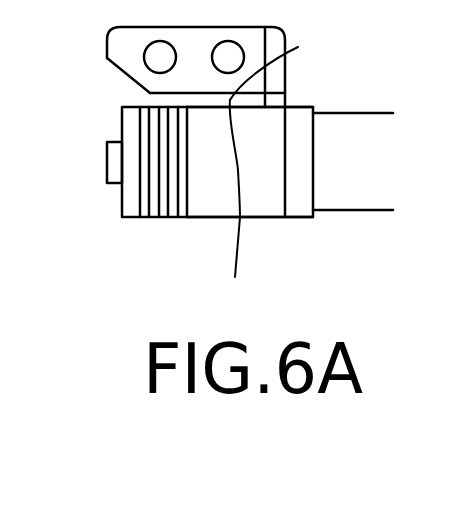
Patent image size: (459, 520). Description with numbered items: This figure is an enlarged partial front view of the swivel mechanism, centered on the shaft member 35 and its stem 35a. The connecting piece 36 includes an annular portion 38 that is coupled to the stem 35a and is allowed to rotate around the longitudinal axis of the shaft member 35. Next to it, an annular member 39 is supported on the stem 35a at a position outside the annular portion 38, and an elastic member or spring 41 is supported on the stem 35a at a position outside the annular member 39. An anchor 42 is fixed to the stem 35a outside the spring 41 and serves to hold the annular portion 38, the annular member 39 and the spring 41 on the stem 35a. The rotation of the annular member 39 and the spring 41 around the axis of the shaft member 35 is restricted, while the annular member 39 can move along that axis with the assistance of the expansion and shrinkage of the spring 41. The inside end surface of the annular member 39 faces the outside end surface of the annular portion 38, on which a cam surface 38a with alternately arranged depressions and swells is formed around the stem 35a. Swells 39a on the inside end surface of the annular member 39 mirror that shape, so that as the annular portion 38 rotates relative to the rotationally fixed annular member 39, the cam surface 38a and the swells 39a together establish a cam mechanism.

The shaft member 35 is at (353, 112).
The stem 35a is at (107, 156).
The connecting piece 36 is at (107, 50).
The annular portion 38 is at (258, 217).
The cam surface 38a is at (296, 53).
The annular member 39 is at (218, 217).
The swells 39a is at (227, 212).
The spring 41 is at (153, 217).
The anchor 42 is at (124, 208).